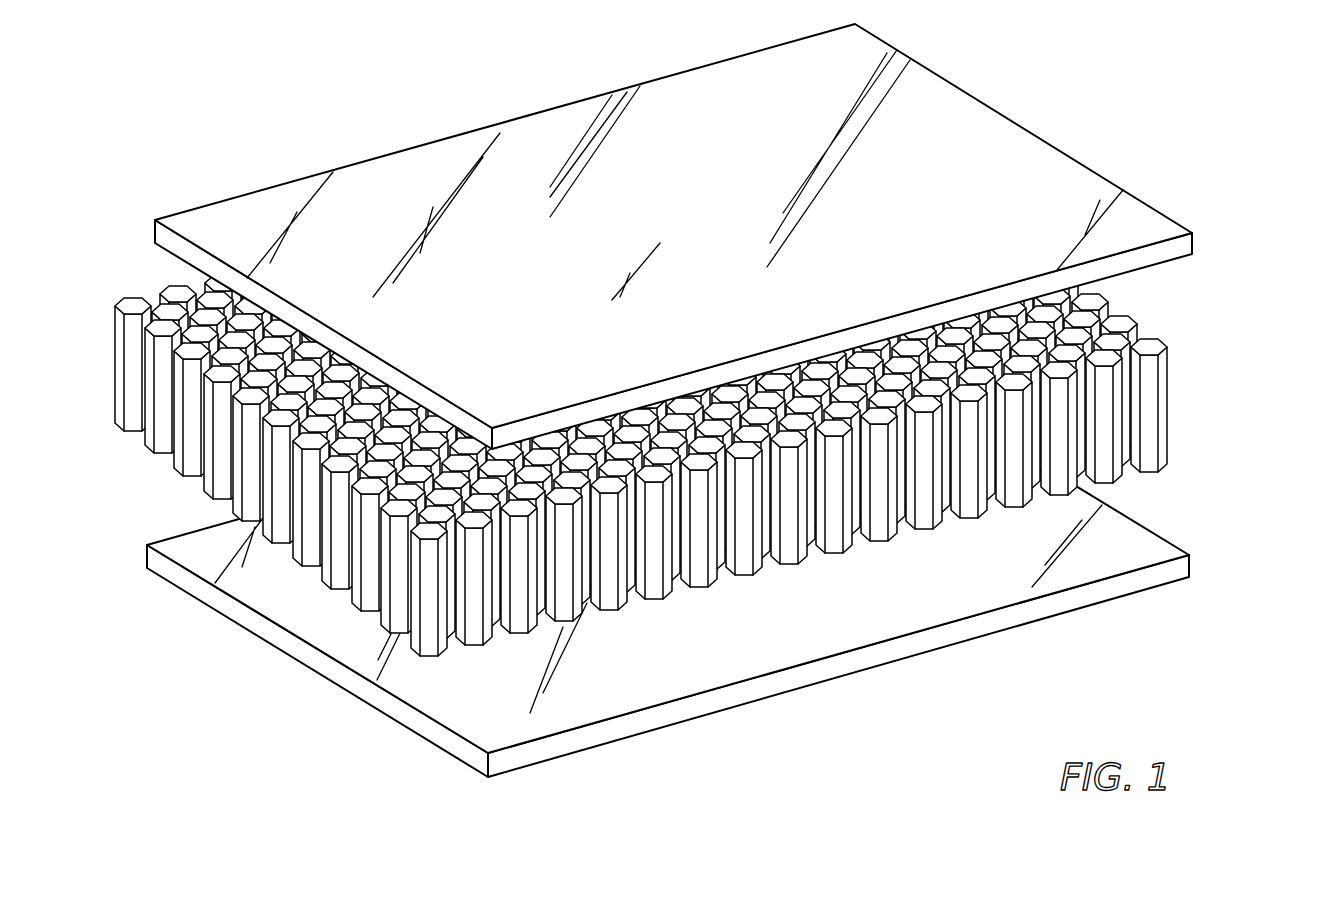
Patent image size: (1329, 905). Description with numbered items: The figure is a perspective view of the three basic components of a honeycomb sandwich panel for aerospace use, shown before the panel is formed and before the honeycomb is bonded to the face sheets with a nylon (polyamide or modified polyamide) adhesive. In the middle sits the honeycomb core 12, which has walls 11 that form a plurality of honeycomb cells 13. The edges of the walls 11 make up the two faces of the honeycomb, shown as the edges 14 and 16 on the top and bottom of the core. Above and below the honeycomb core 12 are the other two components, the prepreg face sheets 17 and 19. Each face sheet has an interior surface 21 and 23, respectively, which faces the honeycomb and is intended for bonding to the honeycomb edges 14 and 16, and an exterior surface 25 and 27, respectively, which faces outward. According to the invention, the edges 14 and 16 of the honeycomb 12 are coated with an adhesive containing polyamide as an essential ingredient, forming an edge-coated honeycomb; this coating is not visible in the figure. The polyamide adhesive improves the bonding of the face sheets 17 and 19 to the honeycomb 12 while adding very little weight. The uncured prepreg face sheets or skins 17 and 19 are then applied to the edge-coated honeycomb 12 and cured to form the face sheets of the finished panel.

The walls 11 is at (690, 431).
The honeycomb core 12 is at (1160, 383).
The honeycomb cells 13 is at (1163, 302).
The edge 14 is at (195, 305).
The edge 16 is at (185, 480).
The prepreg face sheet 17 is at (162, 218).
The prepreg face sheet 19 is at (1065, 600).
The interior surface 21 is at (1168, 260).
The interior surface 23 is at (708, 586).
The exterior surface 25 is at (704, 236).
The exterior surface 27 is at (572, 756).